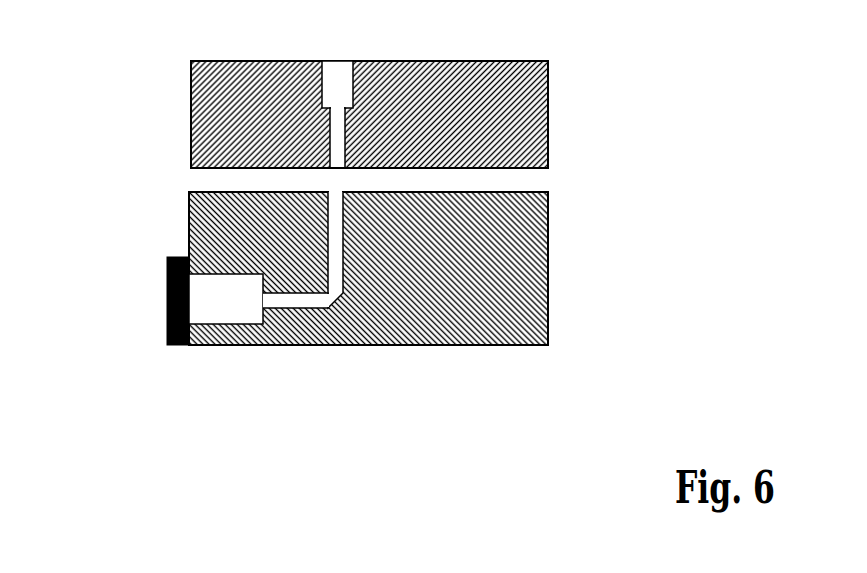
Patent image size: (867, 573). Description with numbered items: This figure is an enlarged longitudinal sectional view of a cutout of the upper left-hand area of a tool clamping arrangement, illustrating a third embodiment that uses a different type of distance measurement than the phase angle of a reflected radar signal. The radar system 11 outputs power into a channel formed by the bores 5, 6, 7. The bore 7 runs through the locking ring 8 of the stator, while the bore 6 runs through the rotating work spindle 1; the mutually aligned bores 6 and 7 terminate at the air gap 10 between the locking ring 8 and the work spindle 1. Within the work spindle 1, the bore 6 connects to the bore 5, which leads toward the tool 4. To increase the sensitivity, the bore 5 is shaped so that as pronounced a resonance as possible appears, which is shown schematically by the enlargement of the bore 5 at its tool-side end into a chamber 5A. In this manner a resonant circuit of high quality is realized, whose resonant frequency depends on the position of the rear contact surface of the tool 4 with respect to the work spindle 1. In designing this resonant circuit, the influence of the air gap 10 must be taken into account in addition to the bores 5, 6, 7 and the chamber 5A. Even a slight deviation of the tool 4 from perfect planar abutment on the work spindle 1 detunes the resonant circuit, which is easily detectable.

The work spindle 1 is at (458, 335).
The tool 4 is at (167, 295).
The bore 5 is at (303, 302).
The chamber 5A is at (222, 310).
The bore 6 is at (333, 238).
The bore 7 is at (337, 138).
The locking ring 8 is at (200, 114).
The air gap 10 is at (200, 182).
The radar system 11 is at (340, 85).